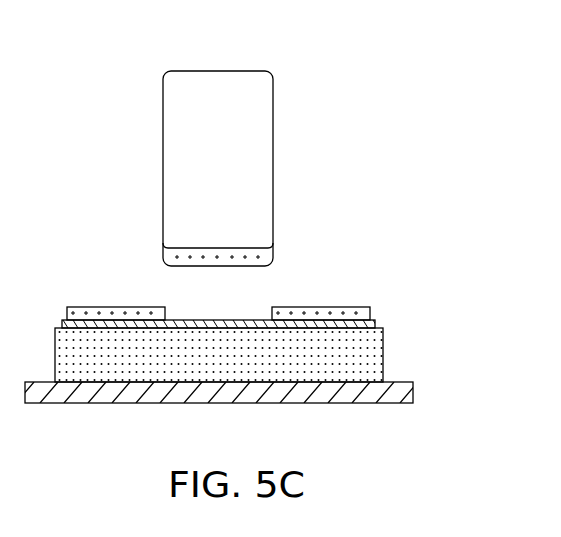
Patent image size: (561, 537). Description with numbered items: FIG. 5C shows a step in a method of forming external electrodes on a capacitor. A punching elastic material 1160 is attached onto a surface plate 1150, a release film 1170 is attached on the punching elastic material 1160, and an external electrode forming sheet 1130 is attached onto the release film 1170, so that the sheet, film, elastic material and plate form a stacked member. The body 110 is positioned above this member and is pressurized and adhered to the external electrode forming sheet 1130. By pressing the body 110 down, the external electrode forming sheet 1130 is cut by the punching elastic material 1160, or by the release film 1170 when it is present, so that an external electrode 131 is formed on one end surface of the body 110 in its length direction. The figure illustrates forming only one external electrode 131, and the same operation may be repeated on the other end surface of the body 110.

The body 110 is at (217, 85).
The external electrode 131 is at (262, 260).
The external electrode forming sheet 1130 is at (343, 307).
The release film 1170 is at (378, 323).
The punching elastic material 1160 is at (373, 357).
The surface plate 1150 is at (402, 390).